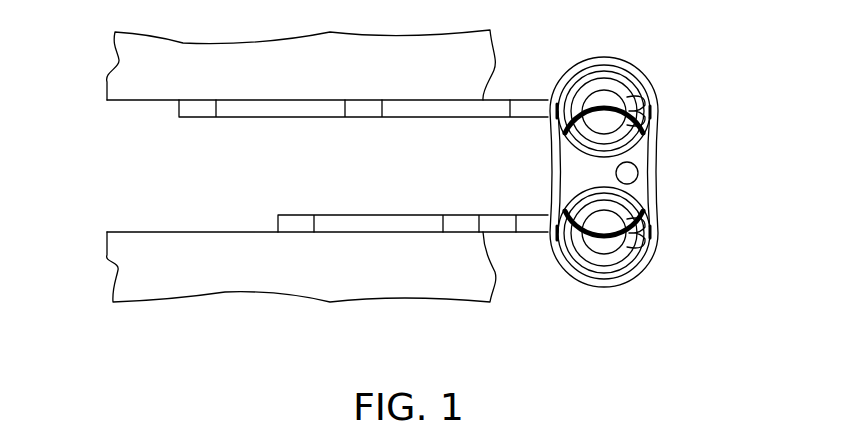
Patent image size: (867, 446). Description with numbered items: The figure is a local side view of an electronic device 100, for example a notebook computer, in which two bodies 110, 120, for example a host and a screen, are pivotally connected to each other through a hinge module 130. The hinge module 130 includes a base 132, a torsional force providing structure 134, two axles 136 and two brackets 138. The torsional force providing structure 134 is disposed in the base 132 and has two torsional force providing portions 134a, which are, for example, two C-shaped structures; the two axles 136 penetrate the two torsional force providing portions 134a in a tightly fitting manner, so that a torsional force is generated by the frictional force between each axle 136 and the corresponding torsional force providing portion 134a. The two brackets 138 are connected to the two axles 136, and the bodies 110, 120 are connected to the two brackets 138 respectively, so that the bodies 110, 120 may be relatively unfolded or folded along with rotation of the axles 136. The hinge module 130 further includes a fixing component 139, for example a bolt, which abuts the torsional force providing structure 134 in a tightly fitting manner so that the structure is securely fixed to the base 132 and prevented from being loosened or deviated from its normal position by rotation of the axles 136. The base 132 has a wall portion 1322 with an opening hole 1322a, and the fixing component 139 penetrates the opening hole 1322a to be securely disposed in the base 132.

The electronic device 100 is at (753, 355).
The body 110 is at (127, 265).
The body 120 is at (122, 63).
The hinge module 130 is at (622, 173).
The base 132 is at (650, 88).
The wall portion 1322 is at (577, 178).
The opening hole 1322a is at (638, 166).
The torsional force providing structure 134 is at (613, 84).
The torsional force providing portion 134a is at (651, 155).
The axle 136 is at (598, 107).
The bracket 138 is at (407, 114).
The fixing component 139 is at (631, 177).